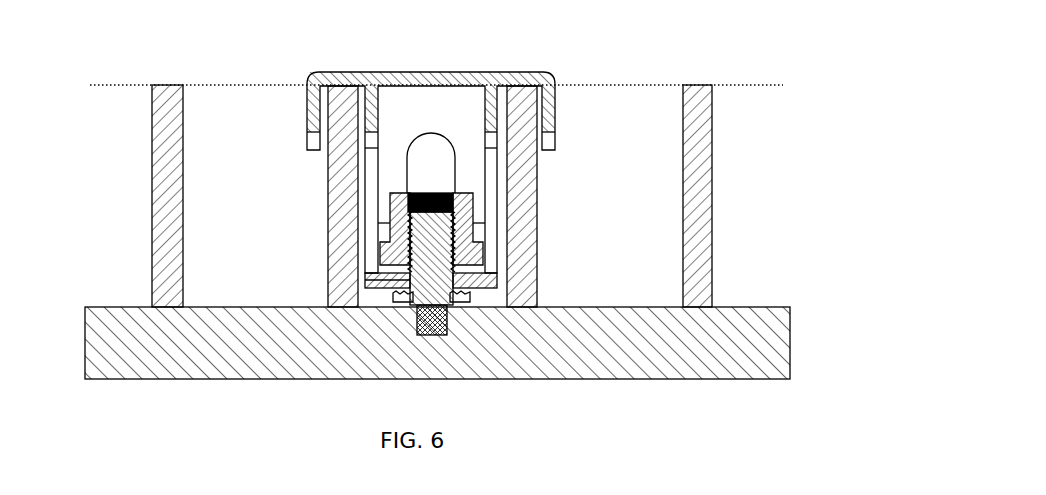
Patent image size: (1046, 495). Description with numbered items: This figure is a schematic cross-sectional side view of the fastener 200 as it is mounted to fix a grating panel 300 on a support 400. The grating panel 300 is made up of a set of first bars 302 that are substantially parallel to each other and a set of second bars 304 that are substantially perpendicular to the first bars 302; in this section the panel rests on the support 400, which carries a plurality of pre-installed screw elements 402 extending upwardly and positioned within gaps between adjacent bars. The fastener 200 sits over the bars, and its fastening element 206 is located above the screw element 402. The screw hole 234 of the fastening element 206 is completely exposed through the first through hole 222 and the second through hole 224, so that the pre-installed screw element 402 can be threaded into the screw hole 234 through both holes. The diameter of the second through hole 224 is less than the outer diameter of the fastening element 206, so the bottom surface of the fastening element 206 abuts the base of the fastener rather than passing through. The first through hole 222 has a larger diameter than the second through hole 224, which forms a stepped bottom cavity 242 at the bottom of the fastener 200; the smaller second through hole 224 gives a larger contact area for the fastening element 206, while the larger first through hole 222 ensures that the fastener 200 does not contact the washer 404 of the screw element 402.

The fastener 200 is at (296, 70).
The fastening element 206 is at (470, 194).
The first through hole 222 is at (483, 276).
The second through hole 224 is at (483, 258).
The screw hole 234 is at (382, 243).
The stepped bottom cavity 242 is at (398, 290).
The grating panel 300 is at (732, 78).
The first bars 302 is at (712, 155).
The second bars 304 is at (167, 196).
The support 400 is at (807, 340).
The pre-installed screw element 402 is at (393, 278).
The washer 404 is at (463, 298).